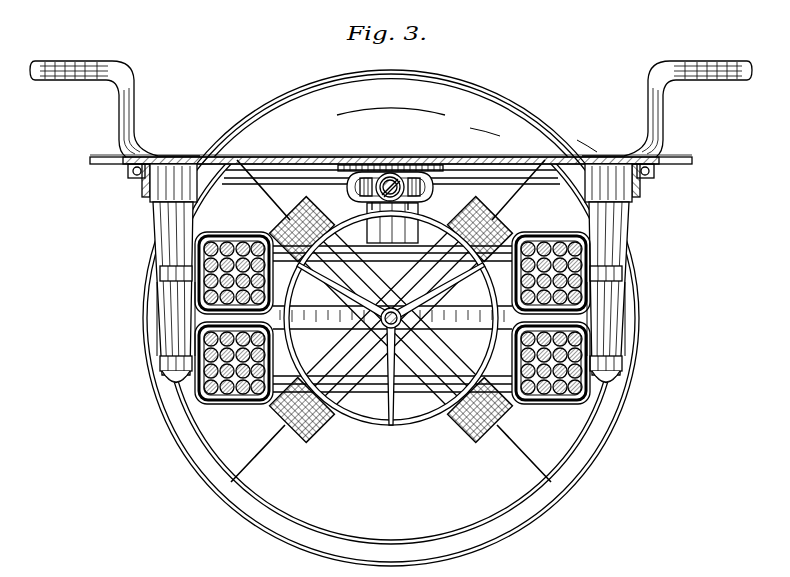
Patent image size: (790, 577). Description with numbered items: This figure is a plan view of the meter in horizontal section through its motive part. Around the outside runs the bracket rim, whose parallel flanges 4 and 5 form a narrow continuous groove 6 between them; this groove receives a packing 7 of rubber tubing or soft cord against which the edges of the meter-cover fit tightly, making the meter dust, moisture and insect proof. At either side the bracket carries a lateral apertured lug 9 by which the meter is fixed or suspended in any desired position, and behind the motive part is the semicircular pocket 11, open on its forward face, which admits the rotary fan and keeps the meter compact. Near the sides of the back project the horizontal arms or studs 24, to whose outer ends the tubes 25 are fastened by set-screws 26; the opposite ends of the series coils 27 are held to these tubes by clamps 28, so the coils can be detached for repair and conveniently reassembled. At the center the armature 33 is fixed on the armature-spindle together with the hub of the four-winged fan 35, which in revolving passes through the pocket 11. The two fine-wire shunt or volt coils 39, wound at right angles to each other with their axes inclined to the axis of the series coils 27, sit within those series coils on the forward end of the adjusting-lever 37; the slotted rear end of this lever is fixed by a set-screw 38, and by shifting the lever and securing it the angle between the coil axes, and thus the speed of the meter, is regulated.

The flange 4 is at (128, 167).
The flange 5 is at (147, 198).
The groove 6 is at (140, 187).
The packing 7 is at (133, 180).
The lateral apertured lug 9 is at (98, 81).
The pocket 11 is at (507, 103).
The horizontal arm 24 is at (178, 243).
The tube 25 is at (173, 325).
The set-screw 26 is at (163, 380).
The series coil 27 is at (203, 297).
The clamp 28 is at (165, 273).
The armature 33 is at (391, 427).
The four-winged fan 35 is at (250, 462).
The adjusting-lever 37 is at (411, 174).
The set-screw 38 is at (386, 174).
The shunt coil 39 is at (318, 427).